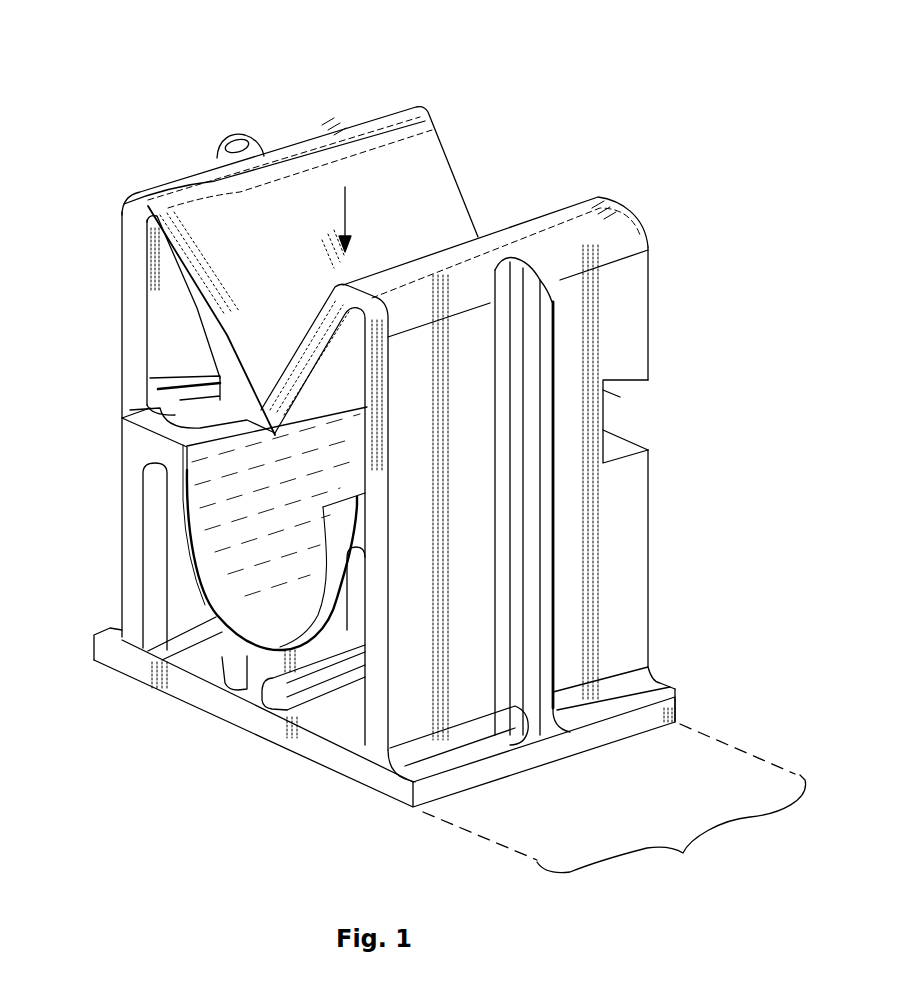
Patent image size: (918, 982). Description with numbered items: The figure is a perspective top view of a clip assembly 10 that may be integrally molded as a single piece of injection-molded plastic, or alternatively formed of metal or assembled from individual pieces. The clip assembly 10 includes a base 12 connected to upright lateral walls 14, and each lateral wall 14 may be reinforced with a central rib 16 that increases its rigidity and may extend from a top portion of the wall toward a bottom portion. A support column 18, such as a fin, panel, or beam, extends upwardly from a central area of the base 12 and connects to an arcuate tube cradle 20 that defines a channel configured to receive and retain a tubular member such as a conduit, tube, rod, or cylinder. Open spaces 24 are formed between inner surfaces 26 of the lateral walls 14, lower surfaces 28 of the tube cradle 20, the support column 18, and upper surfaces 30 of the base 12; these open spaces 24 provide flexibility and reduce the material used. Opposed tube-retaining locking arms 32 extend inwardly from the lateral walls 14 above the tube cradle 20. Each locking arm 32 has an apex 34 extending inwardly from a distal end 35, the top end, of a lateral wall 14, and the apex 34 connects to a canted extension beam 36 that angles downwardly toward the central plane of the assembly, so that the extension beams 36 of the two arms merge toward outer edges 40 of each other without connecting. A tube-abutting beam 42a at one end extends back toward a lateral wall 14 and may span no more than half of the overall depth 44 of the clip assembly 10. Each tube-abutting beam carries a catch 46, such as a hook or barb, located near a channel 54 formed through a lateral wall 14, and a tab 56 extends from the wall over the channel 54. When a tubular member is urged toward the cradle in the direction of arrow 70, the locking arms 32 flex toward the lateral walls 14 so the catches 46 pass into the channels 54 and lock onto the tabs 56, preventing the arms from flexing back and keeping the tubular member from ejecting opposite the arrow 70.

The clip assembly 10 is at (132, 35).
The base 12 is at (560, 763).
The lateral wall 14 is at (121, 512).
The central rib 16 is at (548, 470).
The support column 18 is at (284, 704).
The arcuate tube cradle 20 is at (122, 674).
The open spaces 24 is at (153, 573).
The inner surfaces 26 is at (148, 540).
The lower surfaces 28 is at (215, 657).
The upper surfaces 30 is at (228, 678).
The tube-retaining locking arm 32 is at (432, 173).
The apex 34 is at (393, 103).
The distal end 35 is at (330, 128).
The canted extension beam 36 is at (227, 223).
The outer edge 40 is at (250, 420).
The tube-abutting beam 42a is at (122, 450).
The depth 44 is at (614, 805).
The catch 46 is at (121, 333).
The channel 54 is at (635, 425).
The tab 56 is at (158, 385).
The arrow 70 is at (353, 217).